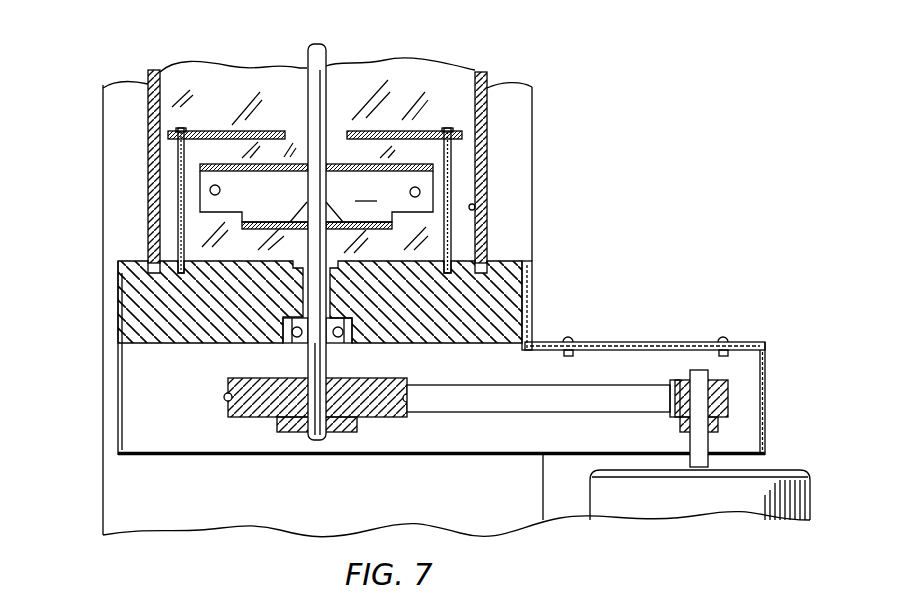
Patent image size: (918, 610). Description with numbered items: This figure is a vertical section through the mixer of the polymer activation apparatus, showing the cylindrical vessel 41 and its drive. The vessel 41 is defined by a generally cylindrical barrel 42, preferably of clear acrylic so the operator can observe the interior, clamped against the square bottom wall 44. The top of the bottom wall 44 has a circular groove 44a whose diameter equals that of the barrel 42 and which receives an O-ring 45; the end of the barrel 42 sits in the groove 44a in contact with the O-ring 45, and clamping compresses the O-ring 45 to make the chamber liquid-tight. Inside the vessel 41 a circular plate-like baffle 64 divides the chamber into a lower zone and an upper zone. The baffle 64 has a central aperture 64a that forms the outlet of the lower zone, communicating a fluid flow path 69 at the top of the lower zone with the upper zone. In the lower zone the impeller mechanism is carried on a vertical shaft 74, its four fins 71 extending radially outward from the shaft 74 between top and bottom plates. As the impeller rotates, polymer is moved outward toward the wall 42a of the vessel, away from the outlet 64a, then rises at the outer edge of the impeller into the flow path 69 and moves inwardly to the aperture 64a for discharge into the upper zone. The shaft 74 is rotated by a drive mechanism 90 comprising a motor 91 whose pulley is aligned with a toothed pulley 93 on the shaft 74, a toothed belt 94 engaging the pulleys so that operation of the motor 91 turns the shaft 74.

The cylindrical vessel 41 is at (487, 72).
The cylindrical barrel 42 is at (147, 117).
The wall of the vessel 42a is at (475, 210).
The bottom wall 44 is at (177, 313).
The circular groove 44a is at (148, 261).
The O-ring 45 is at (532, 268).
The baffle 64 is at (377, 130).
The central aperture 64a is at (297, 132).
The fluid flow path 69 is at (452, 130).
The fin 71 is at (213, 178).
The shaft 74 is at (326, 64).
The drive mechanism 90 is at (786, 408).
The motor 91 is at (808, 477).
The toothed pulley 93 is at (383, 380).
The toothed belt 94 is at (555, 392).